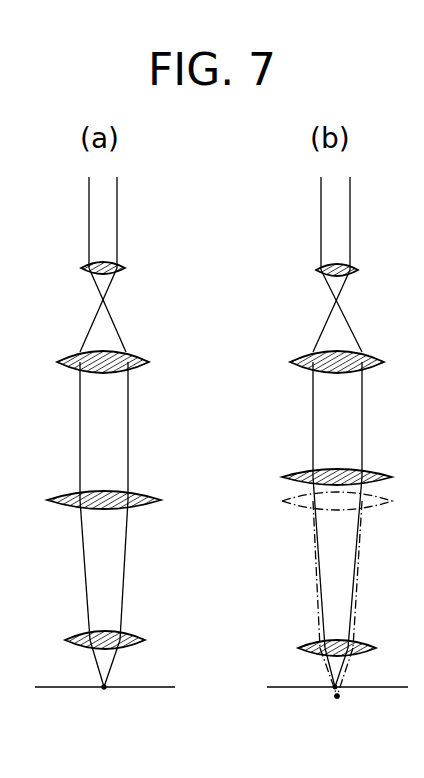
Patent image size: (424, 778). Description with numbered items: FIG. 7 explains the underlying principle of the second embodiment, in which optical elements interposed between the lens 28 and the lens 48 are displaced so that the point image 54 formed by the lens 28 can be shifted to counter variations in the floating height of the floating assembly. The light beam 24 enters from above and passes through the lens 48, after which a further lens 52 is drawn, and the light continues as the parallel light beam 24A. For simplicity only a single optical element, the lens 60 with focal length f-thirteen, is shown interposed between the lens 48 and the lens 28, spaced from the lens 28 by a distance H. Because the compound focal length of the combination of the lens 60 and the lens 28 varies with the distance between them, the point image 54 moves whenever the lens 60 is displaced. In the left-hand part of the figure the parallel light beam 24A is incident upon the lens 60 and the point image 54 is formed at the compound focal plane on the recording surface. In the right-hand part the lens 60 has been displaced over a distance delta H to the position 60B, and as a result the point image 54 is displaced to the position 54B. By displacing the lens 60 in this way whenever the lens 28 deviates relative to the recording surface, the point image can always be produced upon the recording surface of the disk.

The light beam 24 is at (110, 199).
The parallel light beam 24A is at (128, 416).
The lens 28 is at (145, 640).
The lens 48 is at (125, 268).
The collimating lens 52 is at (148, 362).
The point image 54 is at (104, 688).
The displaced point image position 54B is at (330, 685).
The lens 60 is at (158, 500).
The displaced lens position 60B is at (286, 477).